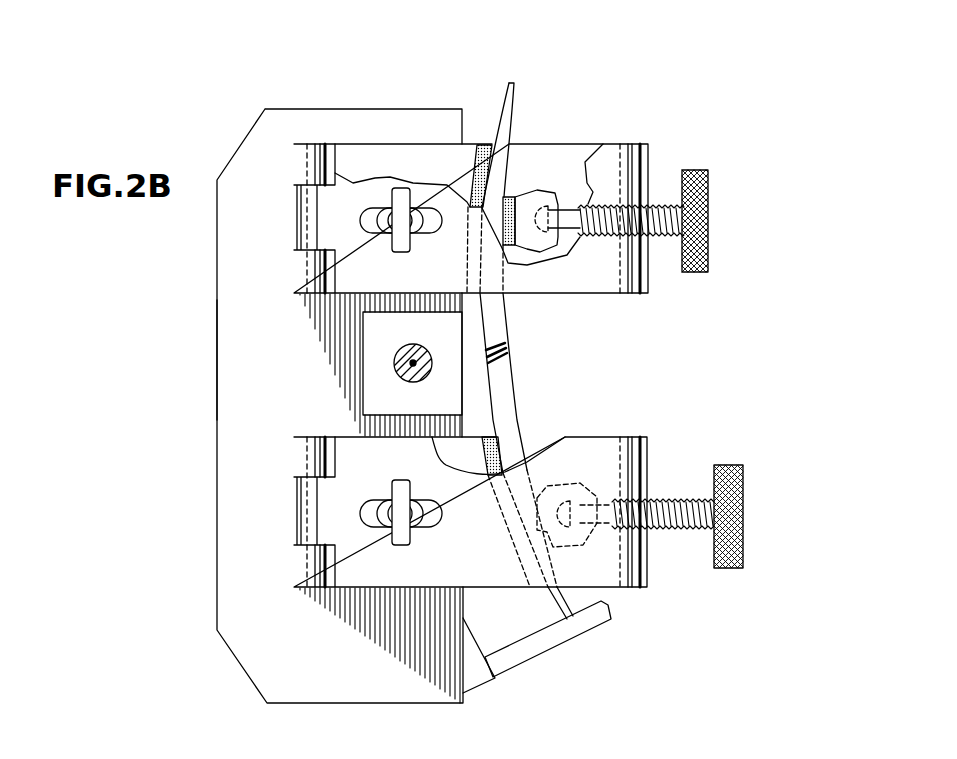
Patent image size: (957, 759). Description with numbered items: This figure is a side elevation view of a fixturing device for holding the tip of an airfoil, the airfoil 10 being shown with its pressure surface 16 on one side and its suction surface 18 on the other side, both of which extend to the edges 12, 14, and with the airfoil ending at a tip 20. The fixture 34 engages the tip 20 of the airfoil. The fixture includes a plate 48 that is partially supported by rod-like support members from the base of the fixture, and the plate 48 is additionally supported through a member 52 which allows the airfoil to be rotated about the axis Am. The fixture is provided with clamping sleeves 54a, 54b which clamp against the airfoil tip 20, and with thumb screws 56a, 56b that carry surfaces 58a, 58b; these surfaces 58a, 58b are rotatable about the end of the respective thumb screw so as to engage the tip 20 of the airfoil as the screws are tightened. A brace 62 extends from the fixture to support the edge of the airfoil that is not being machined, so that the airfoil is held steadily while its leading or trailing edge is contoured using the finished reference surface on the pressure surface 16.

The saw blade assembly 10 is at (510, 338).
The leading edge 12 is at (512, 82).
The trailing edge 14 is at (570, 630).
The pressure surface 16 is at (512, 366).
The suction surface 18 is at (489, 319).
The tip 20 is at (503, 401).
The fixture 34 is at (285, 109).
The plate 48 is at (262, 372).
The member 52 is at (400, 338).
The axis Am is at (412, 379).
The clamping sleeve 54a is at (612, 446).
The clamping sleeve 54b is at (603, 157).
The thumb screw 56a is at (745, 500).
The thumb screw 56b is at (708, 248).
The surface 58a is at (547, 513).
The surface 58b is at (506, 197).
The brace 62 is at (545, 635).